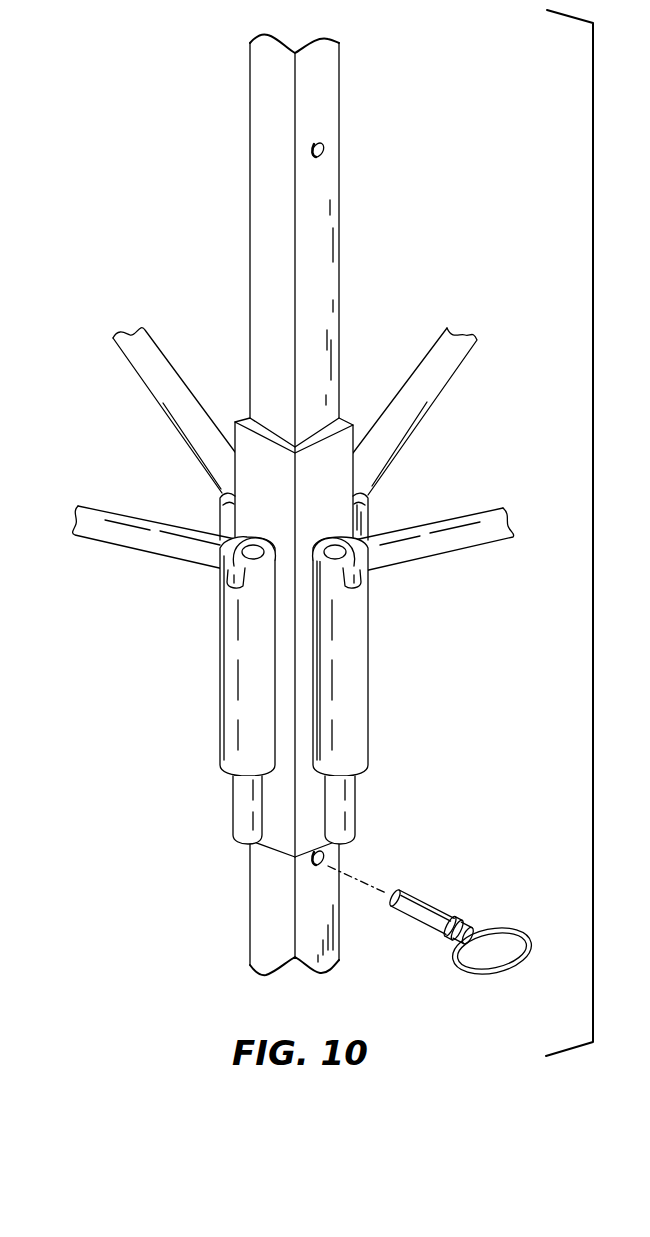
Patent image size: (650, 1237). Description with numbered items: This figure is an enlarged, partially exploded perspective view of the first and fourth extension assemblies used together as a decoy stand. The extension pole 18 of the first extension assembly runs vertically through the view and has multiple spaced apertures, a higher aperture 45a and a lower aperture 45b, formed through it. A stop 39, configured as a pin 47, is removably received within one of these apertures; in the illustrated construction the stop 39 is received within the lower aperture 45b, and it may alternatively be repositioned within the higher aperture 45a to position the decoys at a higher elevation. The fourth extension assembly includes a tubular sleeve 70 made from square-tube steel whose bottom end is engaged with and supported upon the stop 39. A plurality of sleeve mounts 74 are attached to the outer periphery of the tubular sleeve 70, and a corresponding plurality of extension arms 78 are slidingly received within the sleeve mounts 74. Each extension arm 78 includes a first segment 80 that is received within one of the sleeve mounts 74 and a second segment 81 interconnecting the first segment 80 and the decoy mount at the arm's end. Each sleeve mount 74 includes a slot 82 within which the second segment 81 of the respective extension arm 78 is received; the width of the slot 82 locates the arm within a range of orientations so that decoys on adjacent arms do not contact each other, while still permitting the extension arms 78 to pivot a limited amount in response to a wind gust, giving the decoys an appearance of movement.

The extension pole 18 is at (263, 120).
The higher aperture 45a is at (325, 150).
The lower aperture 45b is at (325, 856).
The extension arm 78 is at (152, 357).
The tubular sleeve 70 is at (328, 468).
The sleeve mount 74 is at (230, 518).
The slot 82 is at (232, 595).
The second segment 81 is at (140, 560).
The first segment 80 is at (238, 800).
The pin 47 is at (437, 915).
The stop 39 is at (468, 795).